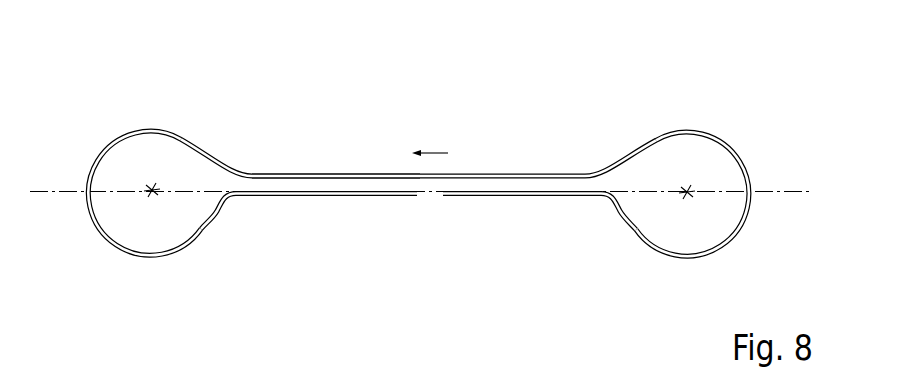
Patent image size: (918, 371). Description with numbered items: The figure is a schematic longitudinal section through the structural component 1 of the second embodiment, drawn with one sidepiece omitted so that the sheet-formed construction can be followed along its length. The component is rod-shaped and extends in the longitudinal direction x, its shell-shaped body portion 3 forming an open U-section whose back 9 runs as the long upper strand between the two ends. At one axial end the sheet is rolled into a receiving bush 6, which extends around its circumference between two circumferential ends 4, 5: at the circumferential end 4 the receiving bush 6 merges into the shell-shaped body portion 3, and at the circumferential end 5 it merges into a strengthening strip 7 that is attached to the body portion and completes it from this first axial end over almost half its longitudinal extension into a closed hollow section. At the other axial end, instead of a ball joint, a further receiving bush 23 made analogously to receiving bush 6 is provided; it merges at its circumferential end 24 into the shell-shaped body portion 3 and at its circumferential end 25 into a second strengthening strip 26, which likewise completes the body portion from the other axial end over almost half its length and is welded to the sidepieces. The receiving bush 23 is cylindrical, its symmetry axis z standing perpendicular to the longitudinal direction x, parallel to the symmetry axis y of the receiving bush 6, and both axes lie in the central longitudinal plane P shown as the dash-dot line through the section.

The structural component 1 is at (418, 198).
The shell-shaped body portion 3 is at (418, 111).
The circumferential end 4 is at (603, 165).
The circumferential end 5 is at (616, 200).
The receiving bush 6 is at (709, 251).
The strengthening strip 7 is at (498, 196).
The back 9 is at (366, 172).
The receiving bush 23 is at (151, 254).
The circumferential end 24 is at (233, 160).
The circumferential end 25 is at (223, 199).
The strengthening strip 26 is at (335, 197).
The longitudinal direction x is at (441, 152).
The symmetry axis y is at (687, 192).
The symmetry axis z is at (152, 190).
The central longitudinal plane P is at (792, 190).